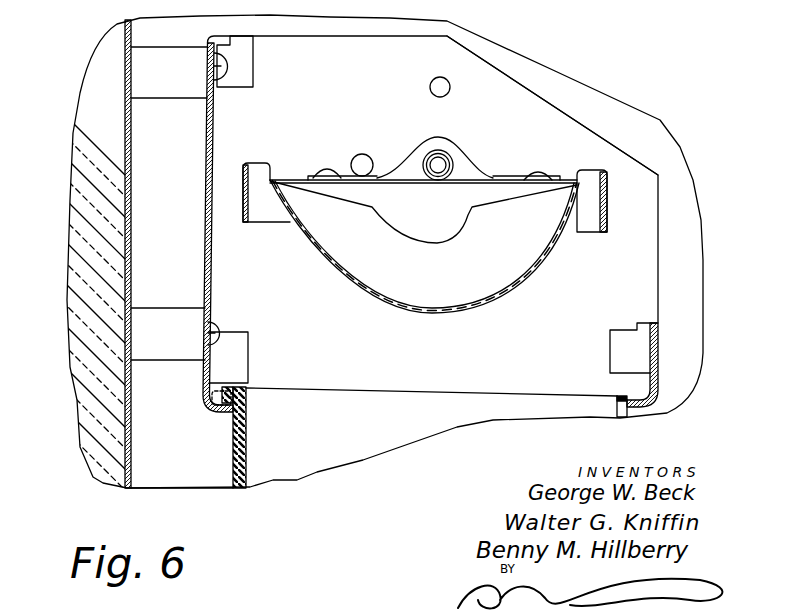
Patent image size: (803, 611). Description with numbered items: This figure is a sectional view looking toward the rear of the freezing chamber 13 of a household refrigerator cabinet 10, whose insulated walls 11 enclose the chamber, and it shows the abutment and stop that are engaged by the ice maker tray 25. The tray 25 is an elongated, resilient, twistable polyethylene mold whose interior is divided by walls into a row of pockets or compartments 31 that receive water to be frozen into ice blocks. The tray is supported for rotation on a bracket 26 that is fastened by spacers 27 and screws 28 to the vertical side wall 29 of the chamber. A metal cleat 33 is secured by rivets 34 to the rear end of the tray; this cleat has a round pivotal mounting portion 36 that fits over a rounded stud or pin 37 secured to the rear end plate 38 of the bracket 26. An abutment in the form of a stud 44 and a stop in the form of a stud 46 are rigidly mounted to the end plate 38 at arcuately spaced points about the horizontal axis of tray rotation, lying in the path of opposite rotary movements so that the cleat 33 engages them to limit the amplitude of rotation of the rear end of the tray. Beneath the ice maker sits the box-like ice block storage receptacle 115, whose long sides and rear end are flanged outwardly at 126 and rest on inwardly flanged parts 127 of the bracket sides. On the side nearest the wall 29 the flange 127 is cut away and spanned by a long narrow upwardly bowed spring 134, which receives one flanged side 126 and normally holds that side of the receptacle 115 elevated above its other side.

The household refrigerator cabinet 10 is at (660, 120).
The insulated walls 11 is at (76, 212).
The freezing or frozen food storage chamber 13 is at (168, 480).
The tray 25 is at (262, 162).
The bracket 26 is at (205, 175).
The spacers 27 is at (170, 70).
The screws 28 is at (222, 66).
The vertical side wall 29 is at (128, 420).
The pockets or compartments 31 is at (393, 278).
The metal cleats 33 is at (465, 170).
The rivets 34 is at (327, 170).
The round pivotal mounting portion 36 is at (446, 153).
The rounded stud or pin 37 is at (432, 157).
The rear end plate 38 is at (543, 97).
The abutment stud 44 is at (362, 154).
The stop stud 46 is at (434, 78).
The ice block storage receptacle 115 is at (243, 460).
The outward flanges 126 is at (205, 385).
The inwardly flanged parts 127 is at (224, 412).
The bowed spring 134 is at (212, 398).